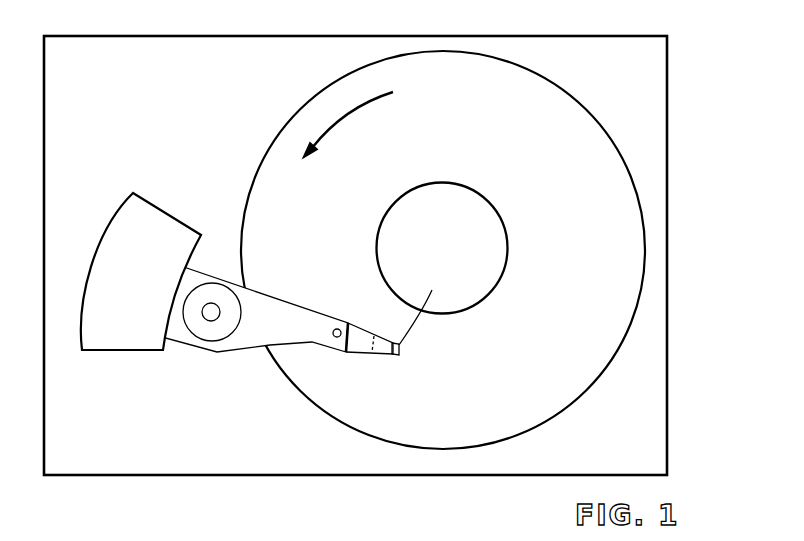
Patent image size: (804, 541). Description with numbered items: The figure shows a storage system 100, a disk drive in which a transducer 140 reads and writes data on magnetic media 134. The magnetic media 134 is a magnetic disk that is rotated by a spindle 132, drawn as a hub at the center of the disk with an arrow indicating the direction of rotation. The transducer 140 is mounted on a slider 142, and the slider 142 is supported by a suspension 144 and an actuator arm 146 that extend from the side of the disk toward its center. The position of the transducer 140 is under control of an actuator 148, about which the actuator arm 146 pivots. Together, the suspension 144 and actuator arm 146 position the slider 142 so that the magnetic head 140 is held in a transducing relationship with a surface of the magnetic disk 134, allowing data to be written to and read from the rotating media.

The storage system 100 is at (700, 62).
The spindle 132 is at (478, 193).
The magnetic media 134 is at (588, 268).
The transducer 140 is at (399, 350).
The slider 142 is at (427, 305).
The suspension 144 is at (358, 352).
The actuator arm 146 is at (268, 295).
The actuator 148 is at (207, 315).